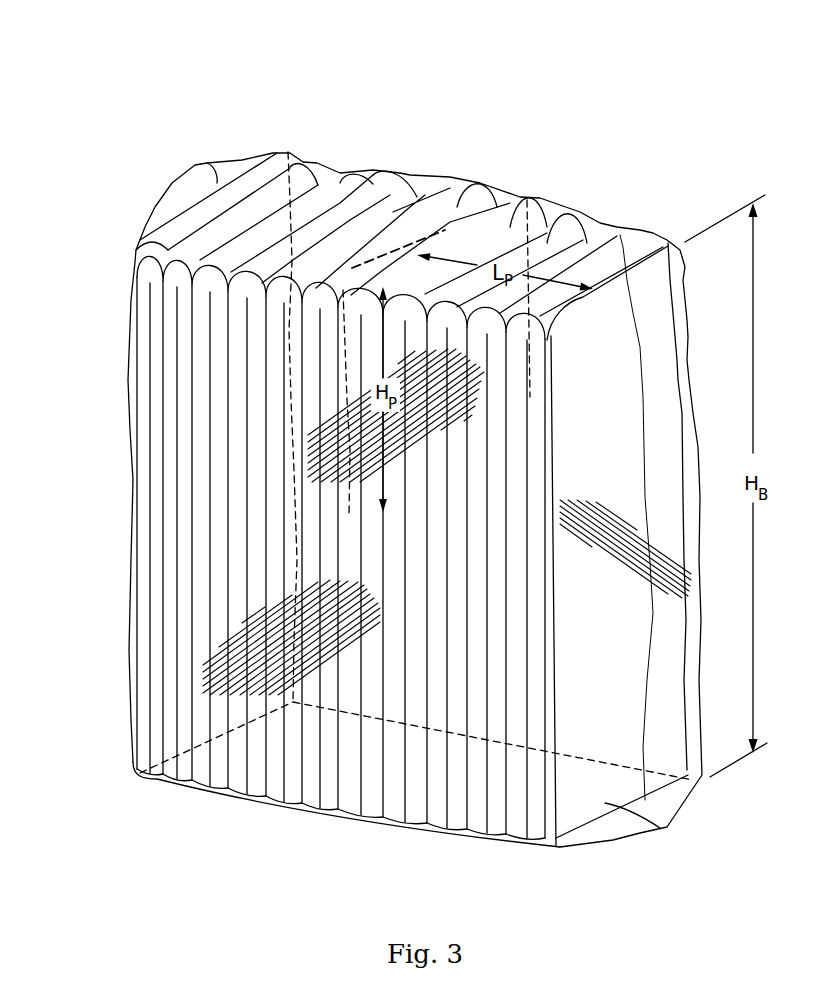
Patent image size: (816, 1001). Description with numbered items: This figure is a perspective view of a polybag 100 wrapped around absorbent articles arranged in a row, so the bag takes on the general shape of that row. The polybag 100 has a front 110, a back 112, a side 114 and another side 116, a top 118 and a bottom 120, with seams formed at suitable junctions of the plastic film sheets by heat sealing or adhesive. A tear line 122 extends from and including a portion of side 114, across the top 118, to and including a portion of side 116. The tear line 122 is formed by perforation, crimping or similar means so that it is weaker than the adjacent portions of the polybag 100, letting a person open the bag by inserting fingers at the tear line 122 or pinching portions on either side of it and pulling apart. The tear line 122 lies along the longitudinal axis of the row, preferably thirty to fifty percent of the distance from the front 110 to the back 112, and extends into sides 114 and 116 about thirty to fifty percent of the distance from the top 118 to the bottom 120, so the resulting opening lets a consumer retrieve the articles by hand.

The polybag 100 is at (288, 116).
The front 110 is at (622, 671).
The back 112 is at (185, 448).
The side 114 is at (383, 534).
The another side 116 is at (476, 178).
The top 118 is at (341, 183).
The bottom 120 is at (300, 790).
The tear line 122 is at (555, 207).